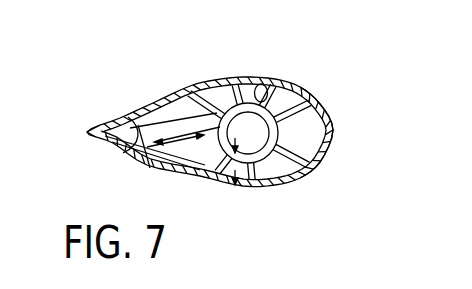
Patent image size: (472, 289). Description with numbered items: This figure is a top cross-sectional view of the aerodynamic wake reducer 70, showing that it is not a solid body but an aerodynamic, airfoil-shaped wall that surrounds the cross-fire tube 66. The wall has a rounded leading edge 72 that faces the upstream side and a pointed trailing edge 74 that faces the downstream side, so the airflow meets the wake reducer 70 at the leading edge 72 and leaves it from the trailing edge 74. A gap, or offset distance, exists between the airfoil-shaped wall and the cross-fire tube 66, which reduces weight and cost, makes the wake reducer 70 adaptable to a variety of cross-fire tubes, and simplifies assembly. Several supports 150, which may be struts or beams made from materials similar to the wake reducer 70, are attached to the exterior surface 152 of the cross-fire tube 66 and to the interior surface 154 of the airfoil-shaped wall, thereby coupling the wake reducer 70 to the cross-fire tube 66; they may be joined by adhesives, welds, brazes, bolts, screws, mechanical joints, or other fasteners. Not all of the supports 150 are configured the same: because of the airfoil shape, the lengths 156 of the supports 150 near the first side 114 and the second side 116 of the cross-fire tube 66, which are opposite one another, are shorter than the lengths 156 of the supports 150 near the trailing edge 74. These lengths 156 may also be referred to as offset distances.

The aerodynamic wake reducer 70 is at (350, 88).
The leading edge 72 is at (334, 130).
The trailing edge 74 is at (88, 132).
The first side 114 is at (221, 96).
The supports 150 is at (193, 91).
The exterior surface 152 is at (261, 86).
The interior surface 154 is at (123, 152).
The lengths 156 is at (150, 168).
The second side 116 is at (194, 170).
The cross-fire tube 66 is at (262, 186).